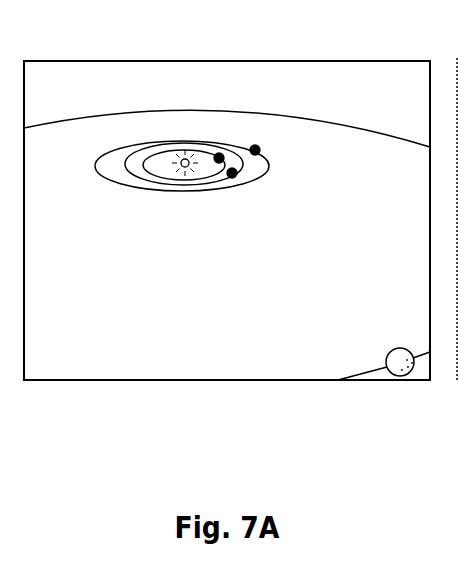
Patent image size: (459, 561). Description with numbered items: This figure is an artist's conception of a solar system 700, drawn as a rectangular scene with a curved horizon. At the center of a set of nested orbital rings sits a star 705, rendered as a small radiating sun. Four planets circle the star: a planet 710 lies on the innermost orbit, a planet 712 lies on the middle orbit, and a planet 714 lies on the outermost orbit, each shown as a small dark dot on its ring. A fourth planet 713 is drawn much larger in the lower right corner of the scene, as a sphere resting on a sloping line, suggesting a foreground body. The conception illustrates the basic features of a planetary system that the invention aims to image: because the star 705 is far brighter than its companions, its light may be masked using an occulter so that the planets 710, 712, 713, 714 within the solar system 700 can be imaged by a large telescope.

The solar system 700 is at (221, 410).
The star 705 is at (182, 158).
The planet 710 is at (218, 153).
The planet 712 is at (232, 168).
The planet 714 is at (256, 146).
The planet 713 is at (395, 377).